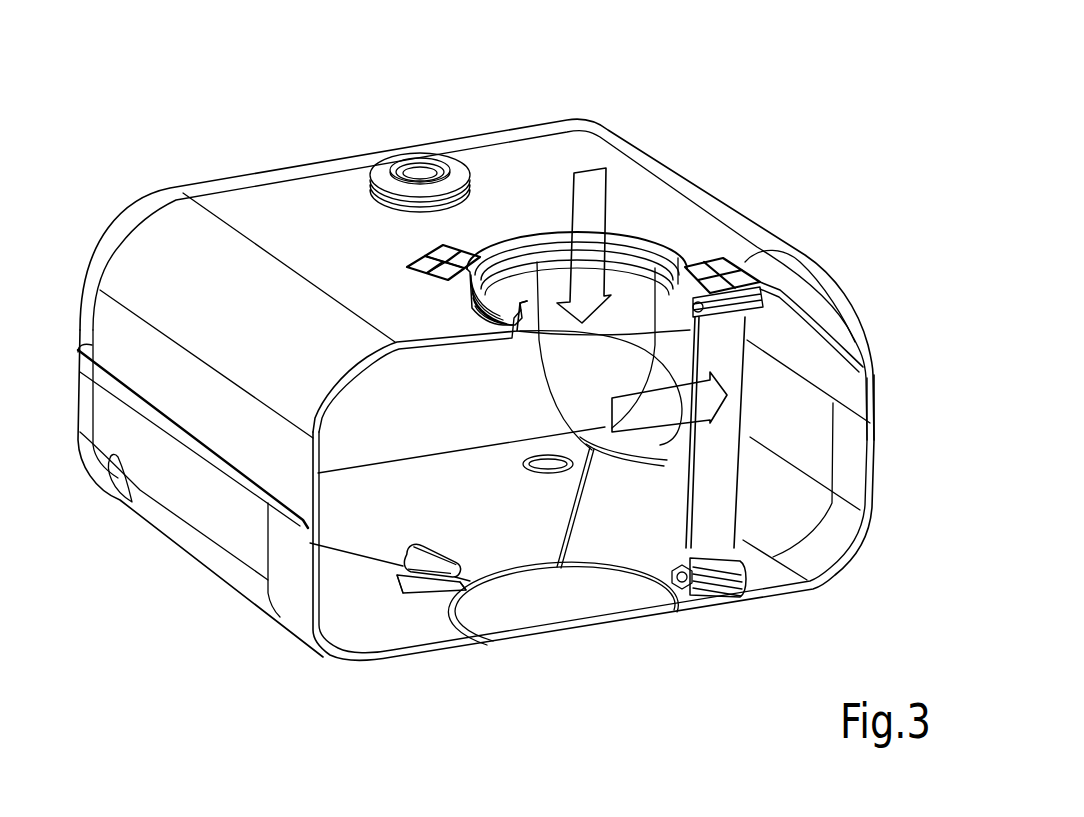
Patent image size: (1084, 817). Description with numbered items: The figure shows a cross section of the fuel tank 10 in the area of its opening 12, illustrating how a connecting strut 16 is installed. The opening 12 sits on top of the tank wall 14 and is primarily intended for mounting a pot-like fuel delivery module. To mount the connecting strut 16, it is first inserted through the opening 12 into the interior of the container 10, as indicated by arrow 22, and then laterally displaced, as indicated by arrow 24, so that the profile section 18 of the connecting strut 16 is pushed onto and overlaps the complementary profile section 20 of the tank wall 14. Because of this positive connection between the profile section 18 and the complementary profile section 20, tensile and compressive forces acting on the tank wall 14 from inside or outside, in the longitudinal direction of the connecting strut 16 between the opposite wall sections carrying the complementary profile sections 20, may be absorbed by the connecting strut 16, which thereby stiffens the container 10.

The fuel tank 10 is at (222, 168).
The opening 12 is at (528, 243).
The tank wall 14 is at (875, 374).
The connecting strut 16 is at (722, 491).
The profile section 18 is at (716, 575).
The complementary profile section 20 is at (430, 556).
The arrow 22 is at (608, 211).
The arrow 24 is at (672, 427).